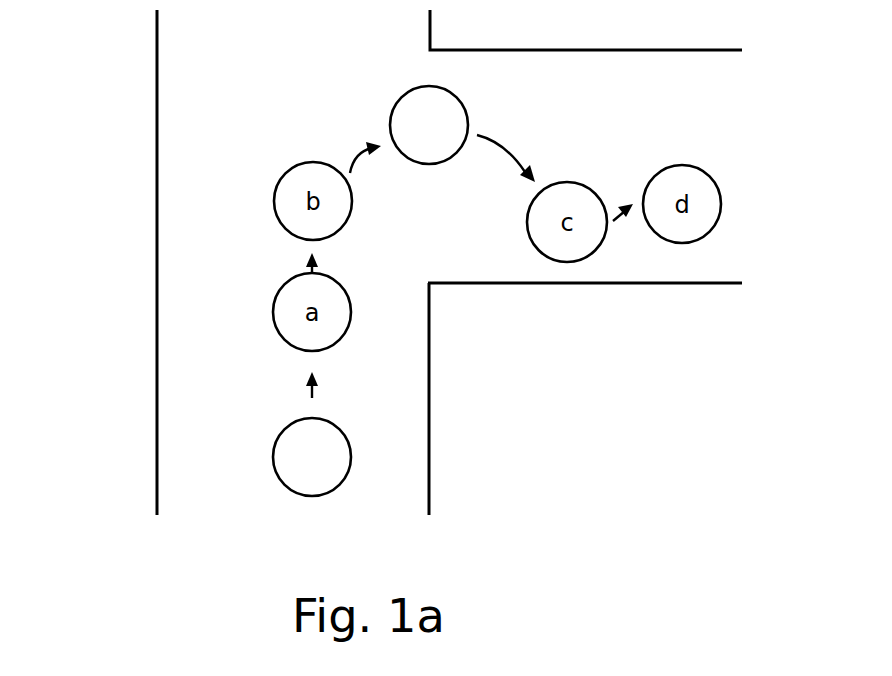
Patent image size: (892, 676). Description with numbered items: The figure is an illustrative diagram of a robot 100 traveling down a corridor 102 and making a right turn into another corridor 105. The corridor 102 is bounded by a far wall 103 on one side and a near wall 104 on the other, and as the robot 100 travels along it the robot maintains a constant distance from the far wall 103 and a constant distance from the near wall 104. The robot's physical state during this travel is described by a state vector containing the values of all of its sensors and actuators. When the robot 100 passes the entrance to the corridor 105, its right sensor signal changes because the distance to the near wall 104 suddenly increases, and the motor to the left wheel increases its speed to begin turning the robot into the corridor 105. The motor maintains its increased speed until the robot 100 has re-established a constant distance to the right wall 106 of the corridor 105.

The robot 100 is at (308, 496).
The corridor 102 is at (273, 80).
The far wall 103 is at (157, 447).
The near wall 104 is at (429, 465).
The corridor 105 is at (682, 107).
The right wall 106 is at (525, 283).